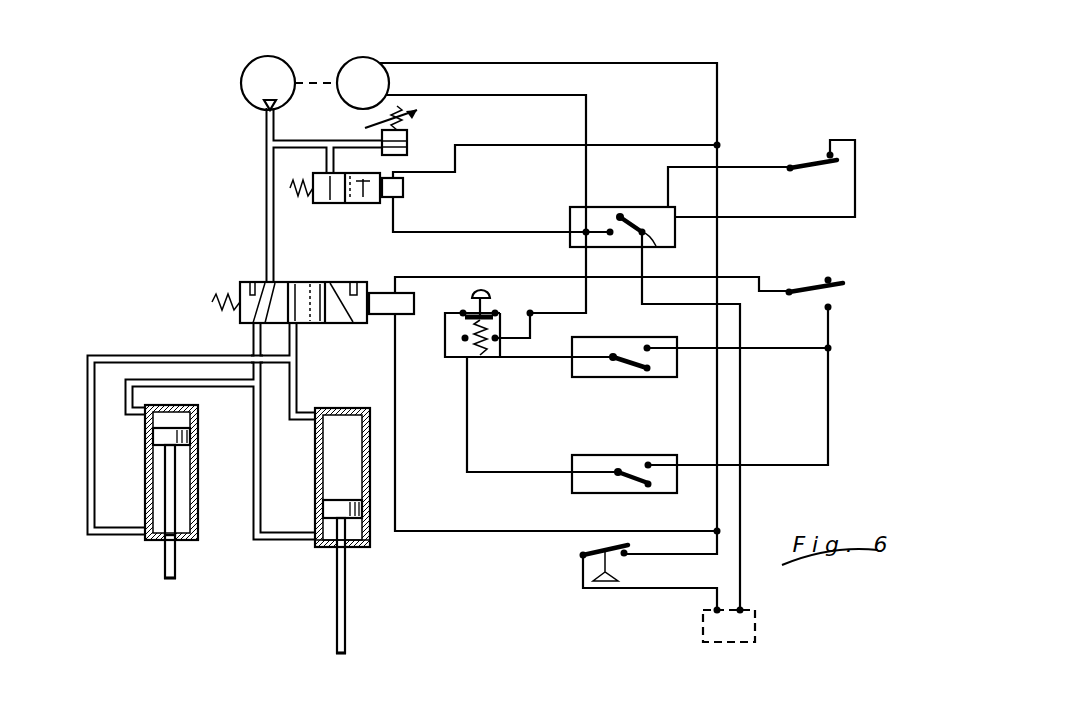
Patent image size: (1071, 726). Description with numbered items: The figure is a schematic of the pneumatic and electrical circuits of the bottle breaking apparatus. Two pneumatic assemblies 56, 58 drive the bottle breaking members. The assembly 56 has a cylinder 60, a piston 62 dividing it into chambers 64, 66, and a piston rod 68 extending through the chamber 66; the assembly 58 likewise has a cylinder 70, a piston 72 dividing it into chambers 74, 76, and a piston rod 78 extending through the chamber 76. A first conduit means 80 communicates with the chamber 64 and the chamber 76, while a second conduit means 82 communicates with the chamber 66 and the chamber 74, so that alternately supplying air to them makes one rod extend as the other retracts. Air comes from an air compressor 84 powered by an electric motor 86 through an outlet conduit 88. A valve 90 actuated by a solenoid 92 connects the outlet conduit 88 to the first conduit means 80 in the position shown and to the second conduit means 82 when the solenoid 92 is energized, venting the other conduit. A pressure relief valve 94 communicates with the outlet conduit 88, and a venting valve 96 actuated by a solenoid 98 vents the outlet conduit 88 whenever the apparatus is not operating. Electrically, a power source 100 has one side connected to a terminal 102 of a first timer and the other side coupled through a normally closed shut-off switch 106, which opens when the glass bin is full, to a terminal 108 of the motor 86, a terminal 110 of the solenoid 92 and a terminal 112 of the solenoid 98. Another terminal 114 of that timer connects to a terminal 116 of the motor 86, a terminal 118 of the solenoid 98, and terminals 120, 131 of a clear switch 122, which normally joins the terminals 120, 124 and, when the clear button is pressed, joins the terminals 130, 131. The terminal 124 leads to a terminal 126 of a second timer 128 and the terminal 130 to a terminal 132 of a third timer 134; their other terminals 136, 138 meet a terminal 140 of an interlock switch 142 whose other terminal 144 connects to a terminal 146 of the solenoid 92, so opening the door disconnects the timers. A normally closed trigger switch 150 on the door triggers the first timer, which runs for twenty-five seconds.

The pneumatic assembly 56 is at (174, 481).
The pneumatic assembly 58 is at (359, 512).
The cylinder 60 is at (192, 507).
The piston 62 is at (170, 442).
The chamber 64 is at (185, 413).
The chamber 66 is at (182, 473).
The piston rod 68 is at (170, 559).
The cylinder 70 is at (368, 461).
The piston 72 is at (352, 512).
The chamber 74 is at (347, 416).
The chamber 76 is at (369, 540).
The piston rod 78 is at (337, 573).
The first conduit means 80 is at (252, 339).
The second conduit means 82 is at (294, 338).
The air compressor 84 is at (268, 56).
The electric motor 86 is at (347, 62).
The outlet conduit 88 is at (266, 219).
The valve 90 is at (312, 278).
The solenoid 92 is at (416, 299).
The pressure relief valve 94 is at (410, 133).
The valve 96 is at (348, 213).
The solenoid 98 is at (405, 188).
The power source 100 is at (702, 624).
The terminal 102 is at (665, 246).
The shut-off switch 106 is at (571, 569).
The terminal 108 is at (603, 213).
The terminal 110 is at (388, 319).
The terminal 112 is at (386, 178).
The terminal 114 is at (609, 247).
The terminal 116 is at (398, 78).
The terminal 118 is at (399, 200).
The terminal 120 is at (499, 312).
The clear switch 122 is at (511, 318).
The terminal 124 is at (463, 310).
The terminal 126 is at (700, 356).
The second timer 128 is at (597, 340).
The terminal 130 is at (465, 341).
The terminal 131 is at (496, 341).
The terminal 132 is at (607, 469).
The third timer 134 is at (574, 456).
The terminal 136 is at (647, 345).
The terminal 138 is at (656, 455).
The terminal 140 is at (835, 307).
The interlock switch 142 is at (849, 266).
The terminal 144 is at (848, 291).
The terminal 146 is at (392, 281).
The trigger switch 150 is at (808, 148).